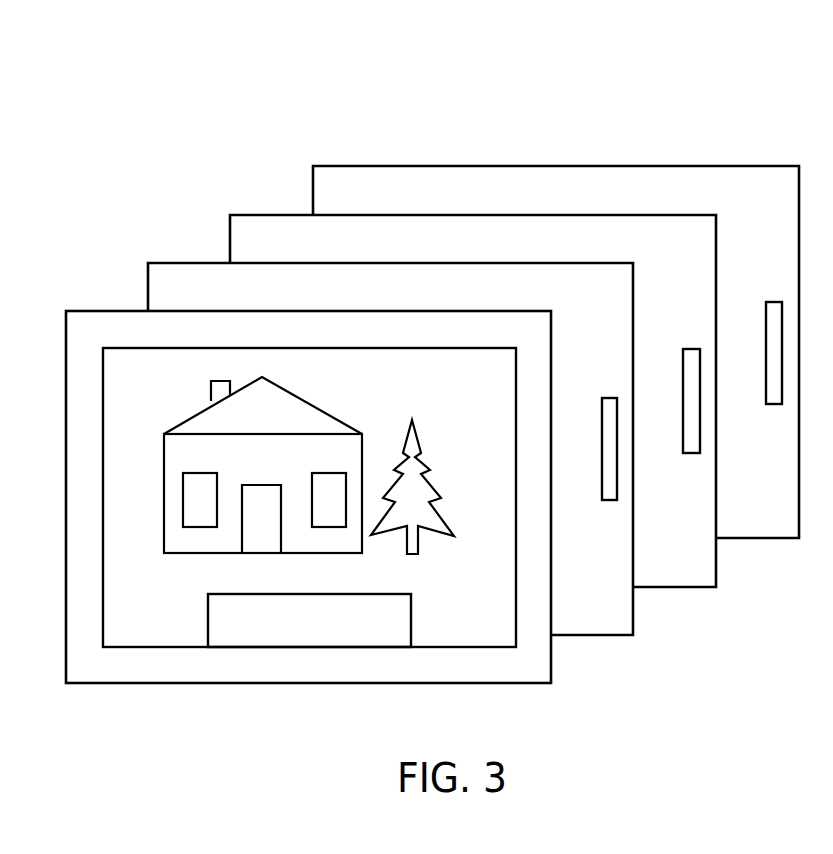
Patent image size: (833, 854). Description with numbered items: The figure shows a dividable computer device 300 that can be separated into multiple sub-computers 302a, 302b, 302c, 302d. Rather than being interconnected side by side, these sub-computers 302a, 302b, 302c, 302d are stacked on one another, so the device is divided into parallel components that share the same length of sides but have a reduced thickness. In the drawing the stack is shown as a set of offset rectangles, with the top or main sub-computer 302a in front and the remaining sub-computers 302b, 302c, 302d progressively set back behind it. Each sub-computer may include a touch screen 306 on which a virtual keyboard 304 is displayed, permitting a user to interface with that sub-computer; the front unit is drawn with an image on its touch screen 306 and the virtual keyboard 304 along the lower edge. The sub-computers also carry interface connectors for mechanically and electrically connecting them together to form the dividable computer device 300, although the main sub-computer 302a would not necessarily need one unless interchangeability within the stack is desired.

The dividable computer device 300 is at (163, 99).
The main sub-computer 302a is at (80, 310).
The sub-computer 302b is at (174, 263).
The sub-computer 302c is at (258, 215).
The sub-computer 302d is at (341, 165).
The virtual keyboard 304 is at (412, 629).
The touch screen 306 is at (414, 403).